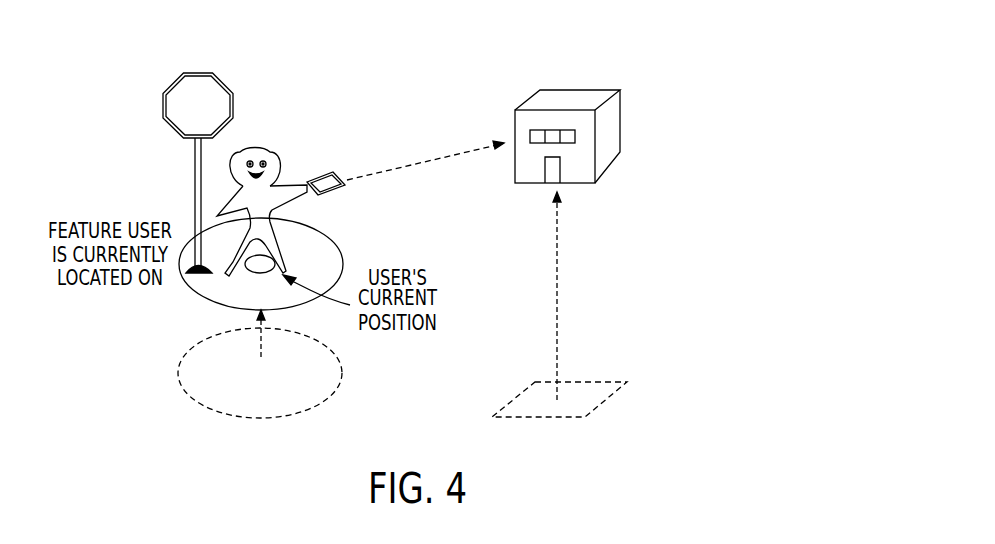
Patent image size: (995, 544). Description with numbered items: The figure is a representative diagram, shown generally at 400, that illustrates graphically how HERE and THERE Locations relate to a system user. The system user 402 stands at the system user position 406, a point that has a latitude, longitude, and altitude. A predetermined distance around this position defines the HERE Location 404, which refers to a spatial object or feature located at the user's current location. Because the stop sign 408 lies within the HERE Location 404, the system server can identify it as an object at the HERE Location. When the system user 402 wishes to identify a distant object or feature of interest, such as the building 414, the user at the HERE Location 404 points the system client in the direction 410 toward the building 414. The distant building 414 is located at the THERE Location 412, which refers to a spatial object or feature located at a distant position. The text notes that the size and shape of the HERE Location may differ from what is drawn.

The representative diagram of HERE and THERE Locations 400 is at (342, 77).
The system user 402 is at (273, 152).
The HERE Location 404 is at (182, 380).
The system user position 406 is at (252, 268).
The stop sign 408 is at (194, 181).
The direction 410 is at (422, 161).
The THERE Location 412 is at (620, 385).
The building 414 is at (575, 88).